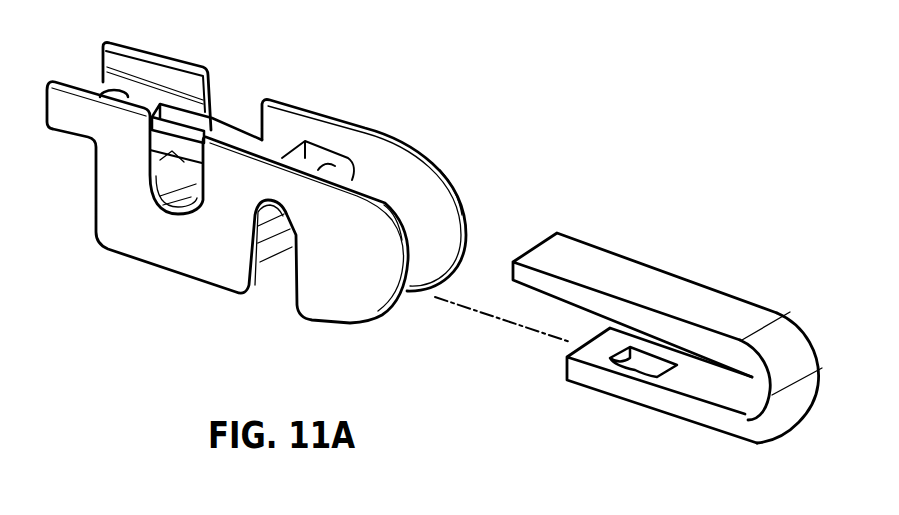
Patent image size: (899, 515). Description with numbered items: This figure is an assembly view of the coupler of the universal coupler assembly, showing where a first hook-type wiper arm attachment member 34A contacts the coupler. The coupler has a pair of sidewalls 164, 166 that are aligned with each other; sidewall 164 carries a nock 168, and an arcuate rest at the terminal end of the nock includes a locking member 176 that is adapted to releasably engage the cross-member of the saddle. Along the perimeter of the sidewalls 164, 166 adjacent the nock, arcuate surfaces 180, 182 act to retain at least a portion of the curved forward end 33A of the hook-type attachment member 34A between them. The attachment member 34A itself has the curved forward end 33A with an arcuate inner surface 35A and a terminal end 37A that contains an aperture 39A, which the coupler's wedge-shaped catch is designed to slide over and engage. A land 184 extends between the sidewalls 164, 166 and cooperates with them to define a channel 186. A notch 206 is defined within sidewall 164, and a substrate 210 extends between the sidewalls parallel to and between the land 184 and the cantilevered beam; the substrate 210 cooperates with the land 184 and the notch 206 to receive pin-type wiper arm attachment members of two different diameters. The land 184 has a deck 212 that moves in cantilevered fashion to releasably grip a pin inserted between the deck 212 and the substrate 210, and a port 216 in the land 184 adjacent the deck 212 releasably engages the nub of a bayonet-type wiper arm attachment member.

The sidewall 164 is at (187, 270).
The sidewall 166 is at (304, 108).
The nock 168 is at (268, 294).
The locking member 176 is at (262, 230).
The arcuate surface 180 is at (382, 303).
The arcuate surface 182 is at (462, 200).
The land 184 is at (95, 82).
The channel 186 is at (77, 68).
The notch 206 is at (158, 225).
The substrate 210 is at (168, 179).
The deck 212 is at (180, 120).
The port 216 is at (116, 90).
The first hook-type wiper arm attachment member 34A is at (690, 348).
The curved forward end 33A is at (794, 400).
The arcuate inner surface 35A is at (745, 405).
The terminal end 37A is at (572, 383).
The aperture 39A is at (650, 368).